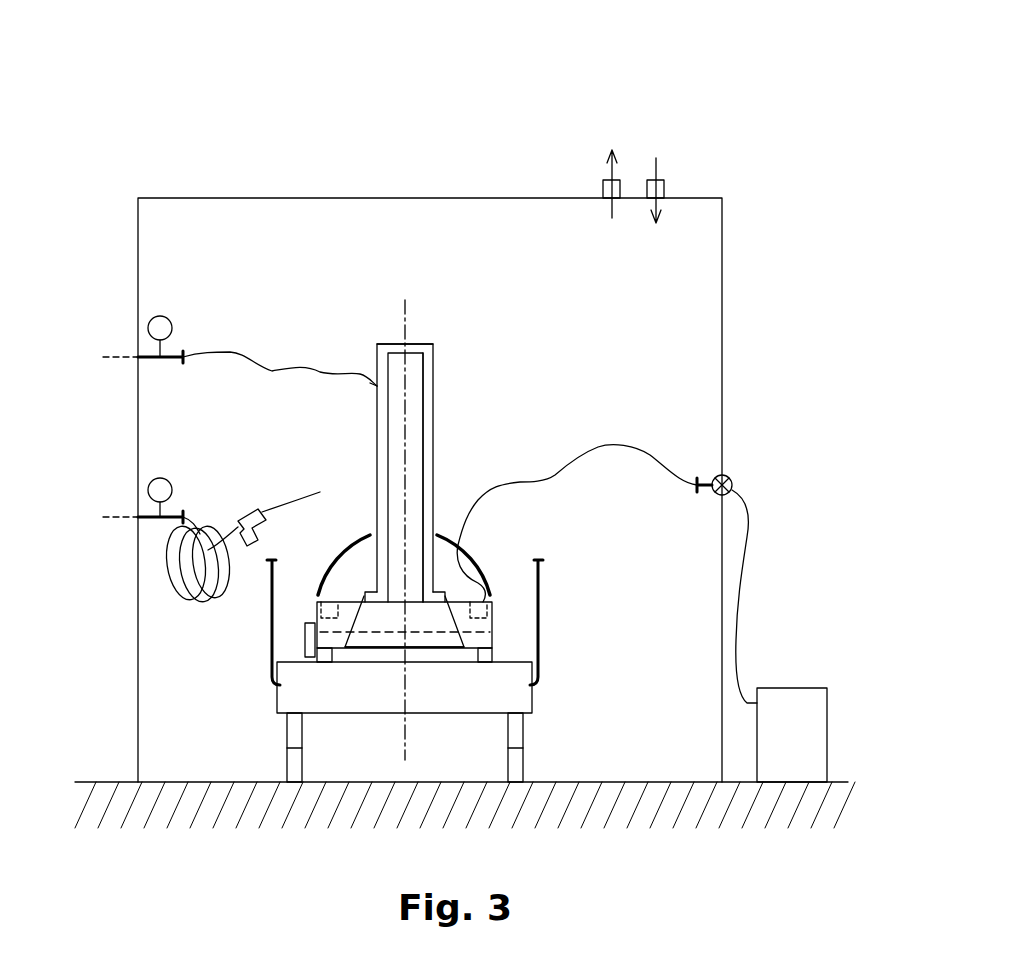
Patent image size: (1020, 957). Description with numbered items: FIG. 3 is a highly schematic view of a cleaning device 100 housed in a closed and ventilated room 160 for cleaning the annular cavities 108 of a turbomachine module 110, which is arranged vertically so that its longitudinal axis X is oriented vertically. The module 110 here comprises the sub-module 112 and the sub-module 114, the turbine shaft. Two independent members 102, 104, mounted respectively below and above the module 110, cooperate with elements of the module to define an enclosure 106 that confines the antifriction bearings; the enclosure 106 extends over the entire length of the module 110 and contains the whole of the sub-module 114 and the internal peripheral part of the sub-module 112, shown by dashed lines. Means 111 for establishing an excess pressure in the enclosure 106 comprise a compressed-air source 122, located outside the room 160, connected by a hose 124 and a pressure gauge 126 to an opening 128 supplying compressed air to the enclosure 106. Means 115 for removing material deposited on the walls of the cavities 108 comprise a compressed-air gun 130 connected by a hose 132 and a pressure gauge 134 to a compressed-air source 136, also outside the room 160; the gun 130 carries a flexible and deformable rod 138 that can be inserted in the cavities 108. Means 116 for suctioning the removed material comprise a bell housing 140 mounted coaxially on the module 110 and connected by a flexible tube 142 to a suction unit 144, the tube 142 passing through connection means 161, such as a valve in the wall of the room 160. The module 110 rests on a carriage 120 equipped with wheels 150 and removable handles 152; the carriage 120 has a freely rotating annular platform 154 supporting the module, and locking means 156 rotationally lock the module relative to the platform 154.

The cleaning device 100 is at (713, 143).
The isolating member 102 is at (428, 655).
The isolating member 104 is at (433, 492).
The enclosure 106 is at (409, 618).
The annular cavities 108 is at (320, 608).
The module 110 is at (434, 375).
The means for establishing excess pressure 111 is at (222, 340).
The sub-module 112 is at (485, 625).
The sub-module 114 is at (424, 416).
The means for removing material 115 is at (237, 510).
The means for suctioning removed material 116 is at (472, 542).
The carriage 120 is at (536, 703).
The compressed-air source 122 is at (122, 355).
The hose 124 is at (290, 370).
The pressure gauge 126 is at (160, 316).
The opening 128 is at (376, 388).
The compressed-air gun 130 is at (247, 510).
The hose 132 is at (203, 602).
The pressure gauge 134 is at (160, 478).
The compressed-air source 136 is at (120, 519).
The flexible and deformable rod 138 is at (298, 498).
The bell housing 140 is at (331, 560).
The flexible tube 142 is at (635, 458).
The suction unit 144 is at (772, 688).
The wheels 150 is at (287, 768).
The handles 152 is at (271, 620).
The annular platform 154 is at (490, 653).
The locking means 156 is at (304, 637).
The room 160 is at (420, 198).
The connection means 161 is at (730, 479).
The longitudinal axis X is at (408, 342).